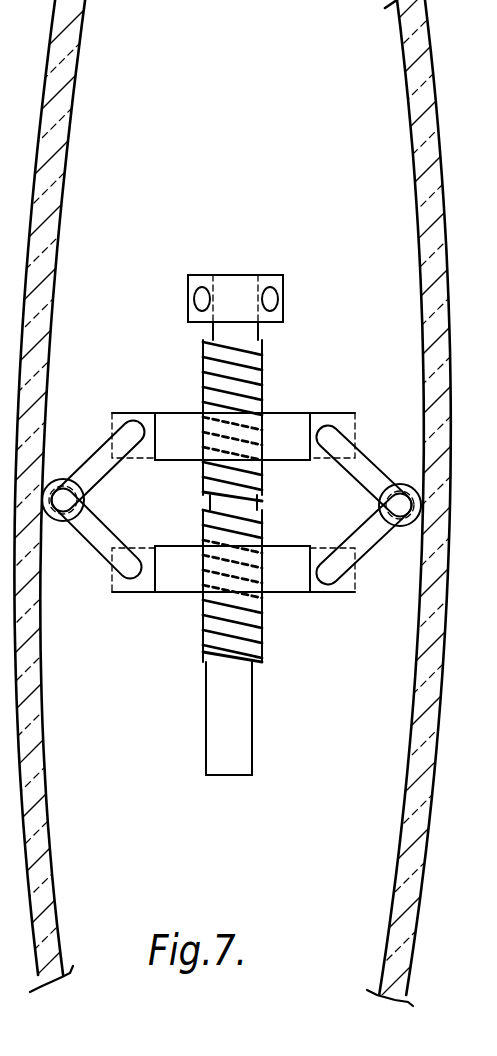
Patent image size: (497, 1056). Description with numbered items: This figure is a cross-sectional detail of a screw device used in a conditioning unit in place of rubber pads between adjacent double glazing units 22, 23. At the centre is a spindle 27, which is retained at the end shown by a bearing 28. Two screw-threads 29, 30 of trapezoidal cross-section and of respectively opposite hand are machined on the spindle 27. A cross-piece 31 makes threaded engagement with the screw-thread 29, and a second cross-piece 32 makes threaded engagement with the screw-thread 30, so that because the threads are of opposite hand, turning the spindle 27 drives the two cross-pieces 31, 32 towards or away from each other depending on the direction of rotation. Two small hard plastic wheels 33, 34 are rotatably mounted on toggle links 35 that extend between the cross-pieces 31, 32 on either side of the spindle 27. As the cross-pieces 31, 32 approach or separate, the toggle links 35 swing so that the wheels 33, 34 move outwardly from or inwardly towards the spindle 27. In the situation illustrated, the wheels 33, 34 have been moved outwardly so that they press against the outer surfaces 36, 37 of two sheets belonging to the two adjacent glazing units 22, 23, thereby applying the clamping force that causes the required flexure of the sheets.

The double glazing unit 22 is at (48, 965).
The double glazing unit 23 is at (380, 995).
The spindle 27 is at (233, 708).
The bearing 28 is at (240, 287).
The screw-thread 29 is at (247, 377).
The screw-thread 30 is at (257, 630).
The cross-piece 31 is at (185, 425).
The cross-piece 32 is at (188, 577).
The hard plastic wheel 33 is at (52, 478).
The hard plastic wheel 34 is at (417, 484).
The toggle links 35 is at (88, 475).
The outer surface 36 is at (43, 712).
The outer surface 37 is at (413, 712).